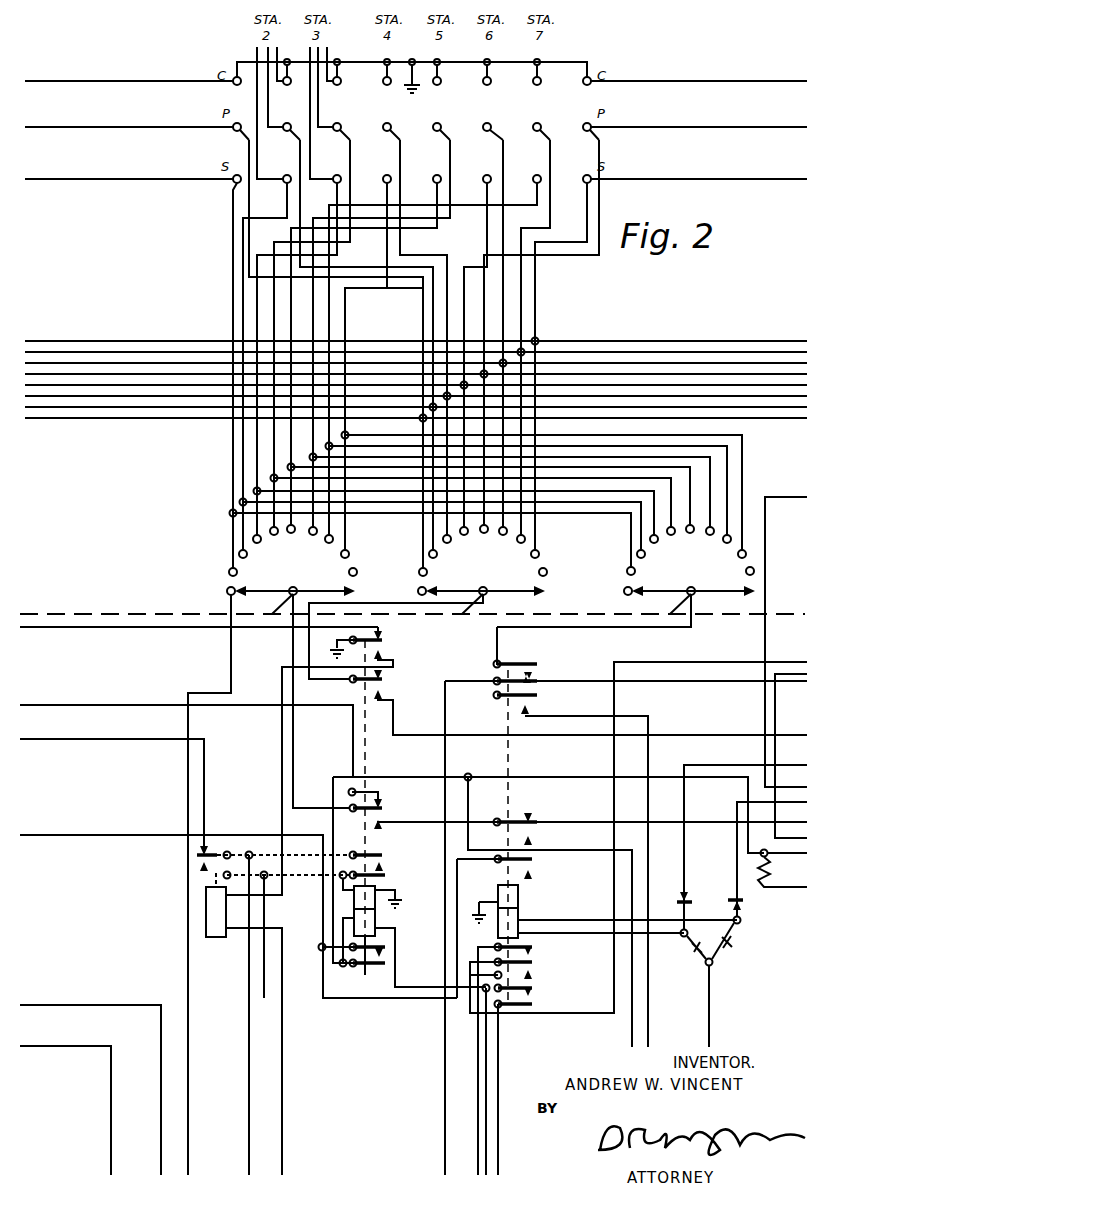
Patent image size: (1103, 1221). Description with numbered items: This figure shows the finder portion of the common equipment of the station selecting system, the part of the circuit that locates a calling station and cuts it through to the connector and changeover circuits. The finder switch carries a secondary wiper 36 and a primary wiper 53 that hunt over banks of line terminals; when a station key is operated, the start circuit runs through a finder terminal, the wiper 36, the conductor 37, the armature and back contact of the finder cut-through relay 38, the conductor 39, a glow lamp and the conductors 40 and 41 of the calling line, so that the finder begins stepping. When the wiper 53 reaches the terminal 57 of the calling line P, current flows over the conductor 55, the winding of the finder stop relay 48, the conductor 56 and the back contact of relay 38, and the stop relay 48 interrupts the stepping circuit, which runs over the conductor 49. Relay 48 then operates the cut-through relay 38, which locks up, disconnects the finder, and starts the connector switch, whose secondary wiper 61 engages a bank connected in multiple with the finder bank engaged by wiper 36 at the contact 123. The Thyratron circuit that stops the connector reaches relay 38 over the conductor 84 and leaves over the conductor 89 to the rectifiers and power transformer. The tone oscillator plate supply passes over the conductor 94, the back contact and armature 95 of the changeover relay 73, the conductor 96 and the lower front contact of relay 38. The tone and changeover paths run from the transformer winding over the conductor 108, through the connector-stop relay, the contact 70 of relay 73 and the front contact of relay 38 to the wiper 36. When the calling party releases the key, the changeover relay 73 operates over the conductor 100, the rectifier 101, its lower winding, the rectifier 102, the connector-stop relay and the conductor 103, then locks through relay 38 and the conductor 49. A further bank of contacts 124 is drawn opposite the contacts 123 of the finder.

The wiper of the finder switch 36 is at (278, 597).
The conductor 37 is at (296, 757).
The finder cut-through relay 38 is at (377, 926).
The conductor 39 is at (348, 706).
The conductor 40 is at (208, 421).
The conductor 41 is at (421, 309).
The finder stop relay 48 is at (218, 940).
The conductor 49 is at (247, 1046).
The wiper of the finder switch 53 is at (458, 597).
The conductor 55 is at (284, 1134).
The conductor 56 is at (280, 786).
The terminal 57 is at (419, 572).
The secondary wiper of the connector switch 61 is at (680, 597).
The back contact of the changeover relay 70 is at (524, 822).
The changeover relay 73 is at (519, 910).
The conductor 84 is at (596, 781).
The conductor 89 is at (320, 1030).
The conductor 94 is at (614, 664).
The armature of the changeover relay 95 is at (535, 968).
The conductor 96 is at (470, 816).
The conductor 100 is at (712, 1030).
The rectifier 101 is at (692, 950).
The rectifier 102 is at (745, 904).
The conductor 103 is at (764, 626).
The conductor 108 is at (774, 700).
The contact 123 is at (229, 572).
The switch contact bank 124 is at (738, 555).